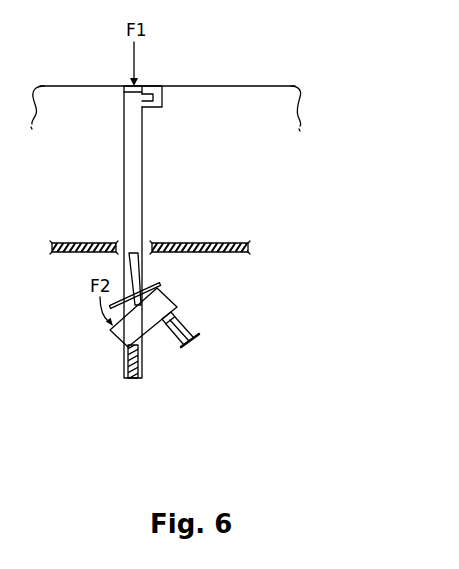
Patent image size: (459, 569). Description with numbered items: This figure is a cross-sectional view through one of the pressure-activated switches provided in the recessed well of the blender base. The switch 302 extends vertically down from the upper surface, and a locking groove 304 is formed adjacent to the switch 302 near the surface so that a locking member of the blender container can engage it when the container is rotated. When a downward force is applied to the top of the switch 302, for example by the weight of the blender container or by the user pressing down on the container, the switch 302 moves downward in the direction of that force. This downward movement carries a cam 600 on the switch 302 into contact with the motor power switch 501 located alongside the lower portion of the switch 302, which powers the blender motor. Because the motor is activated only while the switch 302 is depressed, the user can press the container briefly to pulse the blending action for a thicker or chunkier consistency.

The pressure-activated switch 302 is at (137, 153).
The locking groove 304 is at (157, 108).
The cam 600 is at (136, 262).
The motor power switch 501 is at (145, 317).